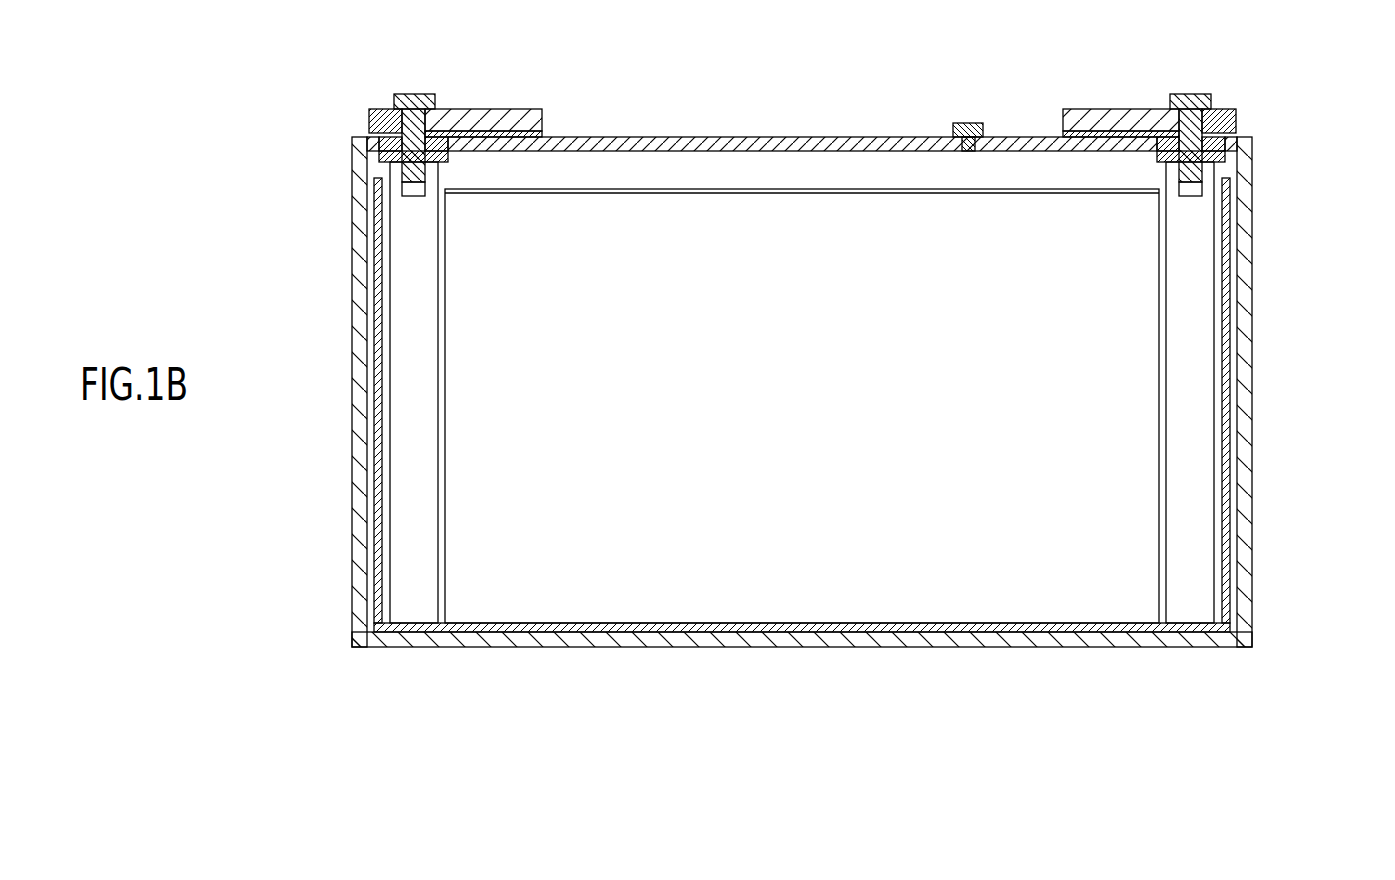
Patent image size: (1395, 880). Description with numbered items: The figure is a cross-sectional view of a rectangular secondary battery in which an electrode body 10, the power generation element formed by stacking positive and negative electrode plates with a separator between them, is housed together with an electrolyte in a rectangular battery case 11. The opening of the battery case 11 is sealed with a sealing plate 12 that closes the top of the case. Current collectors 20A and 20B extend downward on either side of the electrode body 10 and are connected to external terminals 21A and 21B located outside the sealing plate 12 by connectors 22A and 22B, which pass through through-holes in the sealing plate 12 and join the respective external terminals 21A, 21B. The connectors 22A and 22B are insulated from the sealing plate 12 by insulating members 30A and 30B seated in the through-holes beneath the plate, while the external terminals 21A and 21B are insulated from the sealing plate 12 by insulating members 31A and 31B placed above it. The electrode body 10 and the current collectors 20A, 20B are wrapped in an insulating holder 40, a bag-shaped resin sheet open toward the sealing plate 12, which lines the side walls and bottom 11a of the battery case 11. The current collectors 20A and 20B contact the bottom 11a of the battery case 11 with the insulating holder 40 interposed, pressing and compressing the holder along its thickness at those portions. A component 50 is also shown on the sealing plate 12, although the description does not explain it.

The electrode body 10 is at (752, 592).
The battery case 11 is at (1245, 367).
The bottom of the battery case 11a is at (1012, 638).
The sealing plate 12 is at (722, 140).
The current collector 20A is at (1192, 228).
The current collector 20B is at (413, 227).
The external terminal 21A is at (1108, 107).
The external terminal 21B is at (499, 108).
The connector 22A is at (1195, 93).
The connector 22B is at (412, 93).
The insulating member 30A is at (1210, 146).
The insulating member 30B is at (378, 143).
The insulating member 31A is at (1235, 115).
The insulating member 31B is at (368, 112).
The insulating holder 40 is at (1227, 297).
The safety valve 50 is at (970, 122).